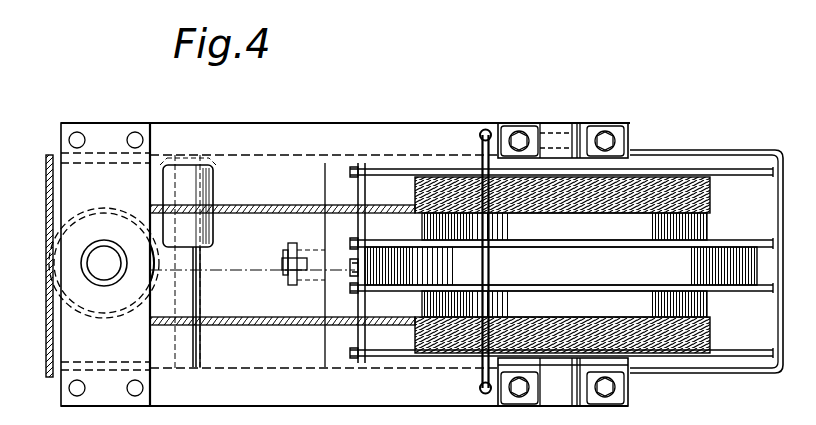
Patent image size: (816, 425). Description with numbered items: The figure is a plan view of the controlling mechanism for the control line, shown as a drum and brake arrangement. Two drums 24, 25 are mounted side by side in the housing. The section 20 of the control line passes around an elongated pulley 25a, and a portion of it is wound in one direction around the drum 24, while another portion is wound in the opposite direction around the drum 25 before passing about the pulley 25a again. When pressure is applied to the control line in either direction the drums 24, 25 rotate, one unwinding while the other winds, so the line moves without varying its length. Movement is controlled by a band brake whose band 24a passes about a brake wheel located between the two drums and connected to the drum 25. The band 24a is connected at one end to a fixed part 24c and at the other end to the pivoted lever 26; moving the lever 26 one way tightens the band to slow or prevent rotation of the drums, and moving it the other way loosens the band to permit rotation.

The section of the control line 20 is at (50, 157).
The elongated pulley 25a is at (213, 270).
The fixed part 24c is at (331, 292).
The pivoted lever 26 is at (290, 249).
The drum 25 is at (603, 223).
The drum 24 is at (643, 310).
The brake band 24a is at (753, 283).